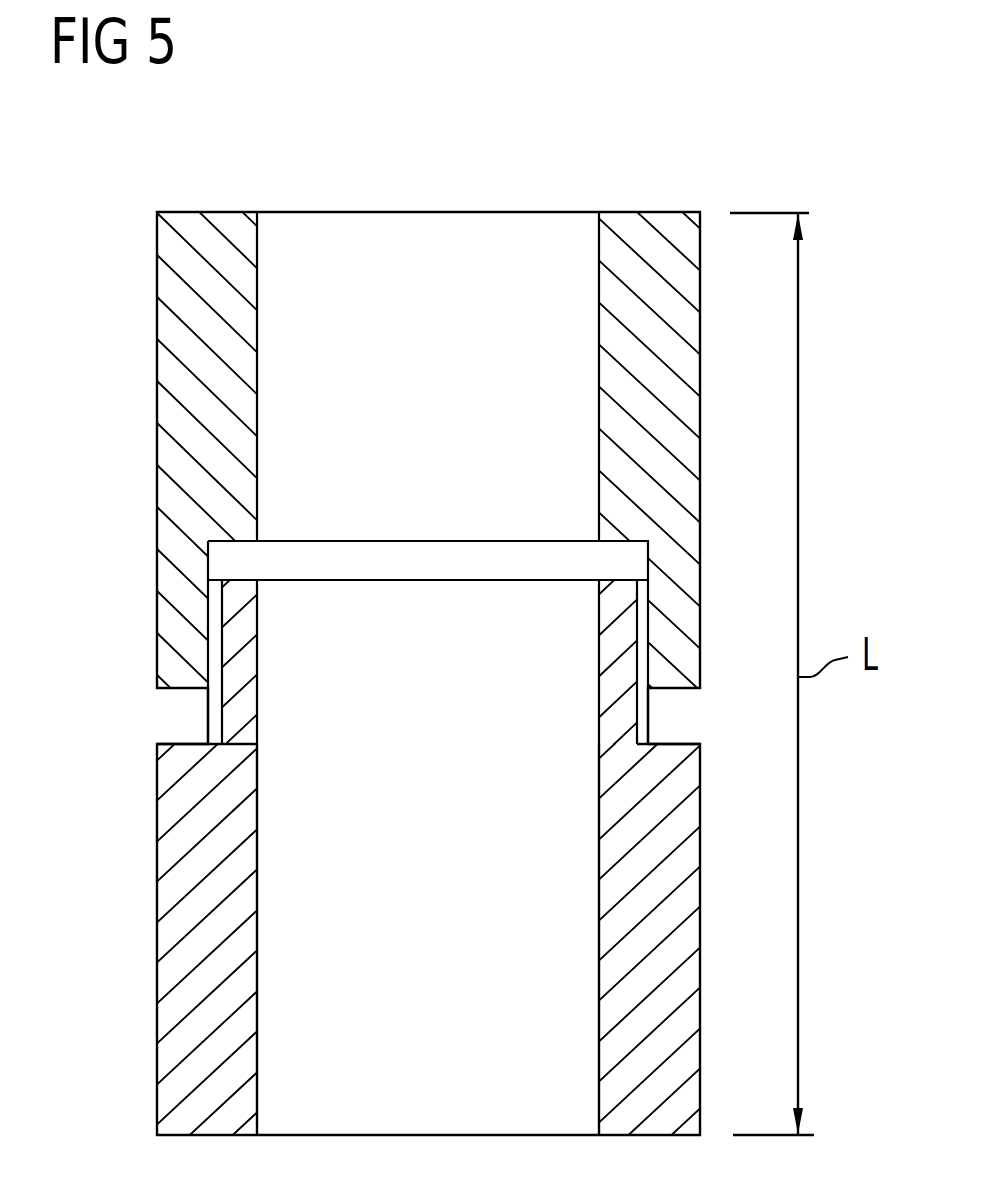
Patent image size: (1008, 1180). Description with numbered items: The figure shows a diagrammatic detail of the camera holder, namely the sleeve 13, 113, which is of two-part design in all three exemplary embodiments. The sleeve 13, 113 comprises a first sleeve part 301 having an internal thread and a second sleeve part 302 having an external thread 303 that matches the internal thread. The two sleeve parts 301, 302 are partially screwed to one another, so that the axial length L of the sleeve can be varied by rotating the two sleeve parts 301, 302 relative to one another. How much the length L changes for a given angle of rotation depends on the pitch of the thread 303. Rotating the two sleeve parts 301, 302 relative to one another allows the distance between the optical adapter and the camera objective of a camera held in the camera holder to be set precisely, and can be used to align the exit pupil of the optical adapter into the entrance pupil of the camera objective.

The sleeve 13 is at (380, 611).
The sleeve 113 is at (428, 673).
The first sleeve part 301 is at (176, 377).
The second sleeve part 302 is at (178, 893).
The external thread 303 is at (207, 713).